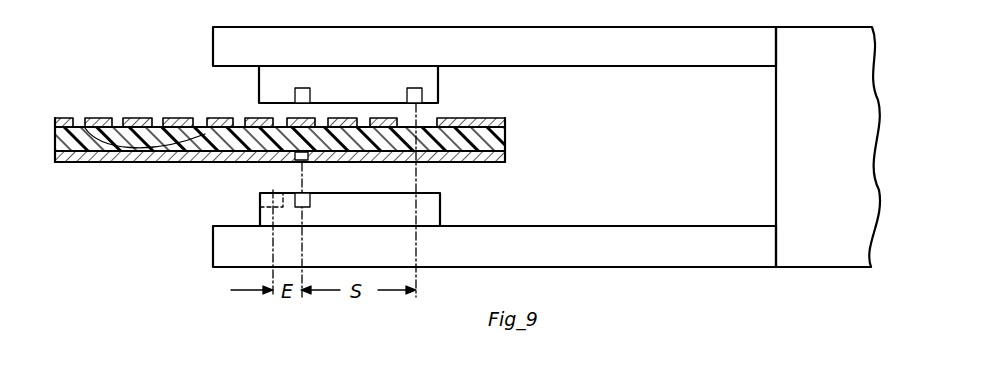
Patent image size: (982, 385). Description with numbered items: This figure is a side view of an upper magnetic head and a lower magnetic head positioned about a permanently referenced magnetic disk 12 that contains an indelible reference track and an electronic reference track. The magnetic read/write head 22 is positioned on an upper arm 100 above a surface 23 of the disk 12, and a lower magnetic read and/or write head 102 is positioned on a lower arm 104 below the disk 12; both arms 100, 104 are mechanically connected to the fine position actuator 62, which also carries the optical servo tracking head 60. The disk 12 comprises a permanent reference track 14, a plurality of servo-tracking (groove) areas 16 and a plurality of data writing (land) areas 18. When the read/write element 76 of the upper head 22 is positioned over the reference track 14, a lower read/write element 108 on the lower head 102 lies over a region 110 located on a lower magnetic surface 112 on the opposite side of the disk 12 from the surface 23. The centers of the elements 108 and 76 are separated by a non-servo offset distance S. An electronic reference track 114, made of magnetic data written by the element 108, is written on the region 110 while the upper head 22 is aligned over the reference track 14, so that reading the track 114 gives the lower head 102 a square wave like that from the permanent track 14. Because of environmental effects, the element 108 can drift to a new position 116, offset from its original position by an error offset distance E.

The upper arm 100 is at (496, 55).
The lower arm 104 is at (565, 259).
The fine position actuator 62 is at (848, 148).
The magnetic read/write head 22 is at (439, 84).
The lower magnetic read and/or write head 102 is at (441, 205).
The optical servo tracking head 60 is at (310, 95).
The read/write element 76 is at (407, 95).
The permanently referenced magnetic disk 12 is at (303, 142).
The permanent reference track 14 is at (436, 134).
The lower magnetic surface 112 is at (494, 160).
The surface 23 is at (489, 117).
The data writing (land) areas 18 is at (215, 116).
The servo-tracking (groove) areas 16 is at (195, 163).
The region 110 is at (300, 163).
The electronic reference track 114 is at (304, 162).
The lower read/write element 108 is at (311, 201).
The new position 116 is at (260, 204).